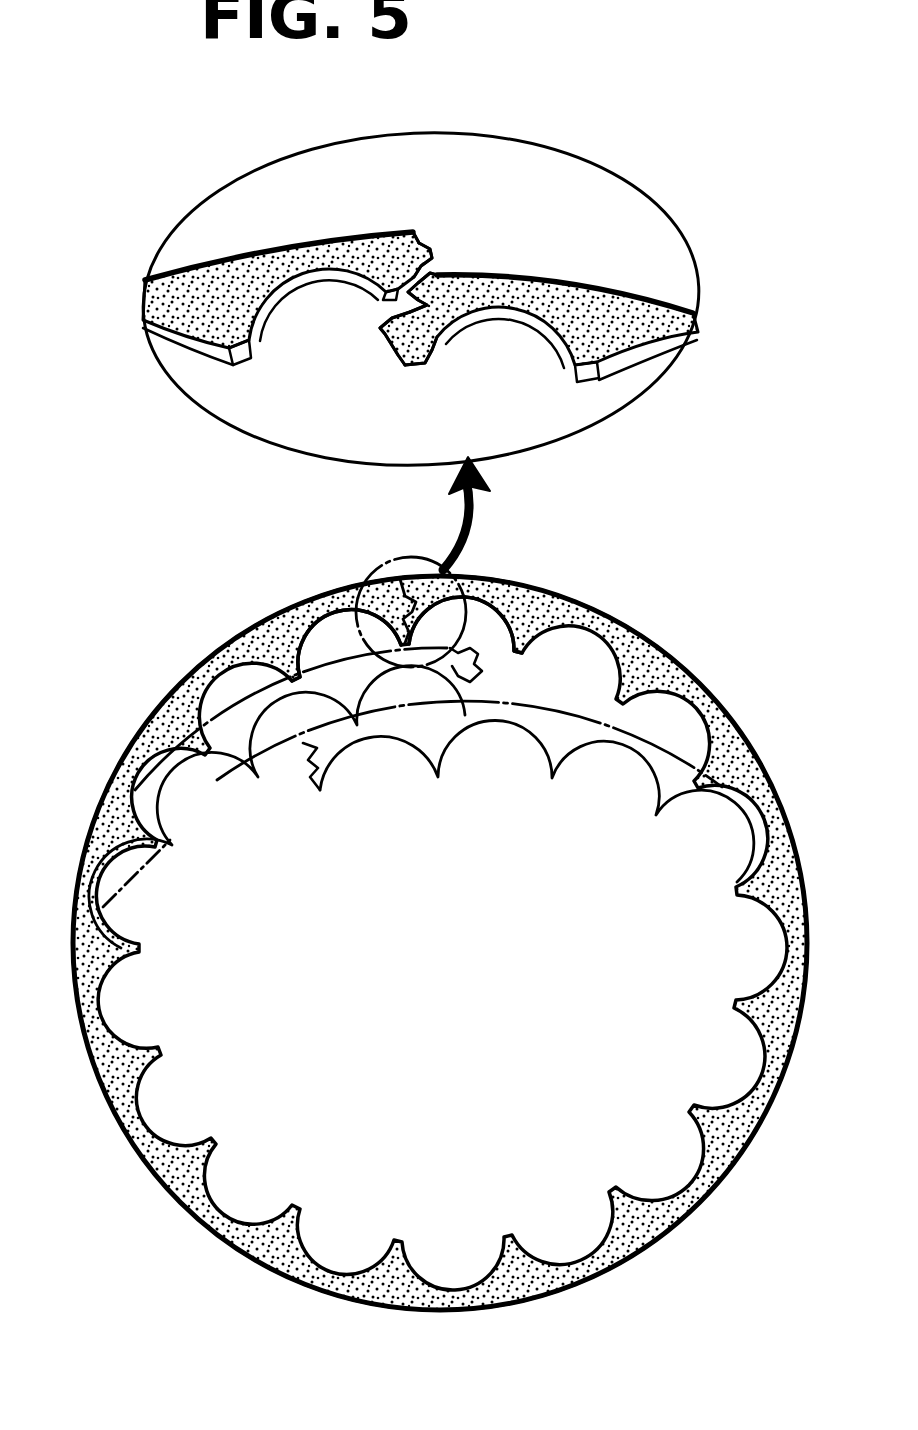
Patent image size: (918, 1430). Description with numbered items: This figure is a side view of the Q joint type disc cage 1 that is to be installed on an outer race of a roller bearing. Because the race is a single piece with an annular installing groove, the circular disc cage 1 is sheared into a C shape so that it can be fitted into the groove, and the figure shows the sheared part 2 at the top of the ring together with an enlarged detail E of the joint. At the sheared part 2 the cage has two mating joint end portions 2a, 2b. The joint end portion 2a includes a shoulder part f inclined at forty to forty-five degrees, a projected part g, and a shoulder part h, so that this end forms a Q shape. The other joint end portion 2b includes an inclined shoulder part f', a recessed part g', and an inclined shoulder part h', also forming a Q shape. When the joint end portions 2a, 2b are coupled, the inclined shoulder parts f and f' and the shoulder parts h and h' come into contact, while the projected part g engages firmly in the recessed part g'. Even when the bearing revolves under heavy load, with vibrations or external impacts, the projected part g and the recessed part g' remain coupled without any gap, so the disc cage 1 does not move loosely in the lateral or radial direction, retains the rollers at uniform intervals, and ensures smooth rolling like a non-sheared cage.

The disc cage 1 is at (655, 636).
The sheared part 2 is at (397, 597).
The joint end portion 2a is at (317, 242).
The joint end portion 2b is at (553, 285).
The enlarged detail region E is at (403, 552).
The shoulder part f is at (428, 176).
The projected part g is at (389, 159).
The shoulder part h is at (344, 350).
The inclined shoulder part f' is at (462, 239).
The recessed part g' is at (446, 364).
The inclined shoulder part h' is at (376, 378).